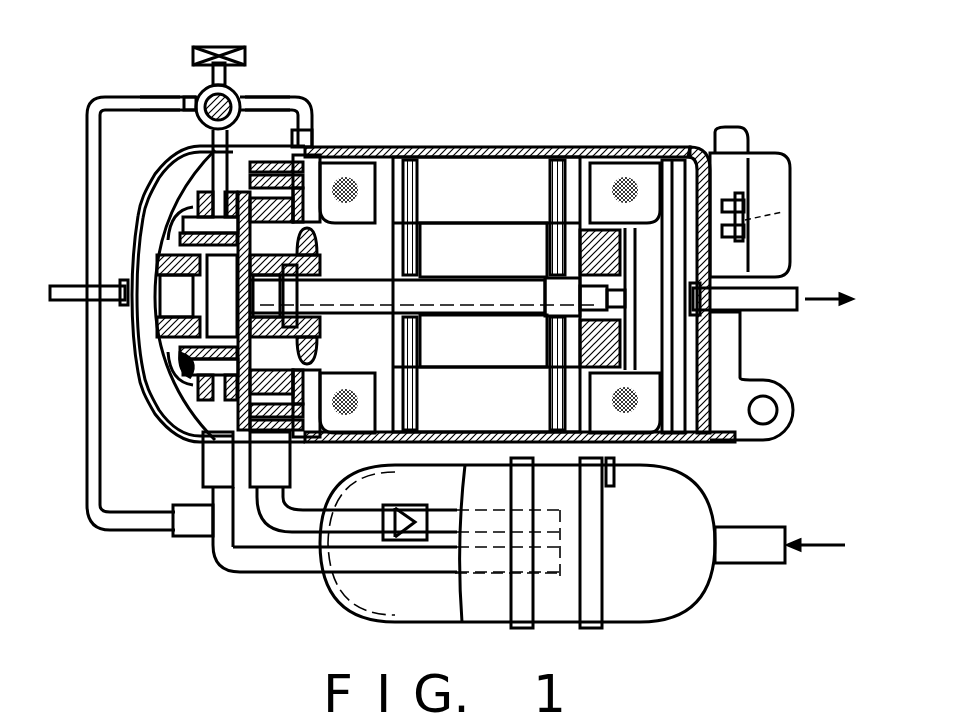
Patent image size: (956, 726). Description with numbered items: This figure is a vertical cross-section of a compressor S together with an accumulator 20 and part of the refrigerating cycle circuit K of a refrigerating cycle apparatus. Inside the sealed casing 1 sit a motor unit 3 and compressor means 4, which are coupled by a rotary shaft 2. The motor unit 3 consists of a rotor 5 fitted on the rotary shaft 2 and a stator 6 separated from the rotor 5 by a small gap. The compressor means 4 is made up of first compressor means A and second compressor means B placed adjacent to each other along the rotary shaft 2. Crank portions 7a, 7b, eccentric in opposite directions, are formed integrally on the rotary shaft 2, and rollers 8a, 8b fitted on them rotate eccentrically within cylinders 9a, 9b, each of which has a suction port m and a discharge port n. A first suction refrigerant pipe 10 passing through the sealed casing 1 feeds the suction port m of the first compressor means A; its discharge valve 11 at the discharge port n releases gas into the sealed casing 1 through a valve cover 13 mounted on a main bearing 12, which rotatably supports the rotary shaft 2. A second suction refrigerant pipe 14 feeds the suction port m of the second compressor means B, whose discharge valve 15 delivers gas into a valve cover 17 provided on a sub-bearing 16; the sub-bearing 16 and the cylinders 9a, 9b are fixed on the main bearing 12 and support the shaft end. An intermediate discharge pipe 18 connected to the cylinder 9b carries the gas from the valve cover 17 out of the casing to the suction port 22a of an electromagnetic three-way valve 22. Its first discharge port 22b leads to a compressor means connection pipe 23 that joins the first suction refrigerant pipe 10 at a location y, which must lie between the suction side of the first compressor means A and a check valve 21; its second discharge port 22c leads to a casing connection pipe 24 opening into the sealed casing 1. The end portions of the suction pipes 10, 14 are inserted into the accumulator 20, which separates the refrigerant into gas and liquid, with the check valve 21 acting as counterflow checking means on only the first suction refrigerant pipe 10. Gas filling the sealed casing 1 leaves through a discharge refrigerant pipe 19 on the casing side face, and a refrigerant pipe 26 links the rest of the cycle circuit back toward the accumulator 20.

The sealed casing 1 is at (485, 147).
The rotary shaft 2 is at (515, 313).
The motor unit 3 is at (598, 162).
The compressor means 4 is at (125, 428).
The rotor 5 is at (512, 233).
The stator 6 is at (451, 160).
The crank portion 7a is at (333, 500).
The crank portion 7b is at (178, 232).
The roller 8a is at (308, 190).
The roller 8b is at (165, 330).
The cylinder 9a is at (313, 165).
The cylinder 9b is at (195, 203).
The first suction refrigerant pipe 10 is at (225, 545).
The discharge valve 11 is at (300, 432).
The main bearing 12 is at (336, 226).
The valve cover 13 is at (330, 346).
The second suction refrigerant pipe 14 is at (205, 470).
The discharge valve 15 is at (180, 358).
The sub-bearing 16 is at (213, 270).
The valve cover 17 is at (170, 385).
The intermediate discharge pipe 18 is at (213, 205).
The discharge refrigerant pipe 19 is at (780, 310).
The accumulator 20 is at (435, 622).
The check valve 21 is at (405, 540).
The electromagnetic three-way valve 22 is at (250, 80).
The suction port 22a is at (213, 135).
The first discharge port 22b is at (205, 92).
The second discharge port 22c is at (300, 148).
The compressor means connection pipe 23 is at (163, 97).
The casing connection pipe 24 is at (258, 97).
The refrigerant pipe 26 is at (760, 565).
The first compressor means A is at (345, 225).
The second compressor means B is at (185, 200).
The compressor S is at (691, 138).
The refrigerating cycle circuit K is at (141, 550).
The suction port m is at (164, 438).
The discharge port n is at (182, 182).
The connection location y is at (277, 527).